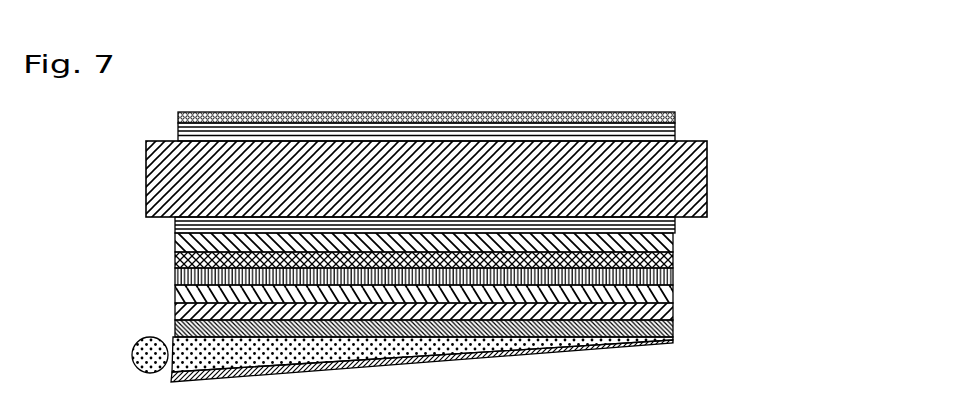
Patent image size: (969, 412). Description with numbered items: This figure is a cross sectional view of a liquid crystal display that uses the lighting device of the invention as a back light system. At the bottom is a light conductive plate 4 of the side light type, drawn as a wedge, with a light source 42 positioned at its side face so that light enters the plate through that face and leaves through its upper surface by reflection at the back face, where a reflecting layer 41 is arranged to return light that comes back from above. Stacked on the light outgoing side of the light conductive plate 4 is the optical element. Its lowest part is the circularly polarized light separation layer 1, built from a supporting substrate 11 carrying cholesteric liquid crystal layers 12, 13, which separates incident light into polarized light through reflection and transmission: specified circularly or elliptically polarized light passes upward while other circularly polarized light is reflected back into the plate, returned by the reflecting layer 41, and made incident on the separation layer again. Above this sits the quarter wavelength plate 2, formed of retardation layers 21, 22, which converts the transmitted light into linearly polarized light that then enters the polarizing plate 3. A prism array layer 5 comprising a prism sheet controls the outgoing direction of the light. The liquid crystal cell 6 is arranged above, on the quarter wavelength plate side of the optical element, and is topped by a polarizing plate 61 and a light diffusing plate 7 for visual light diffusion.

The light diffusing plate 7 is at (675, 113).
The polarizing plate 61 is at (675, 128).
The liquid crystal cell 6 is at (700, 172).
The polarizing plate 3 is at (675, 223).
The prism array layer 5 is at (673, 240).
The quarter wavelength plate 2 is at (499, 277).
The retardation layer 22 is at (672, 263).
The retardation layer 21 is at (747, 273).
The circularly polarized light separation layer 1 is at (499, 327).
The cholesteric liquid crystal layer 13 is at (672, 297).
The cholesteric liquid crystal layer 12 is at (668, 312).
The supporting substrate 11 is at (747, 312).
The light conductive plate 4 is at (227, 350).
The reflecting layer 41 is at (537, 353).
The light source 42 is at (148, 348).